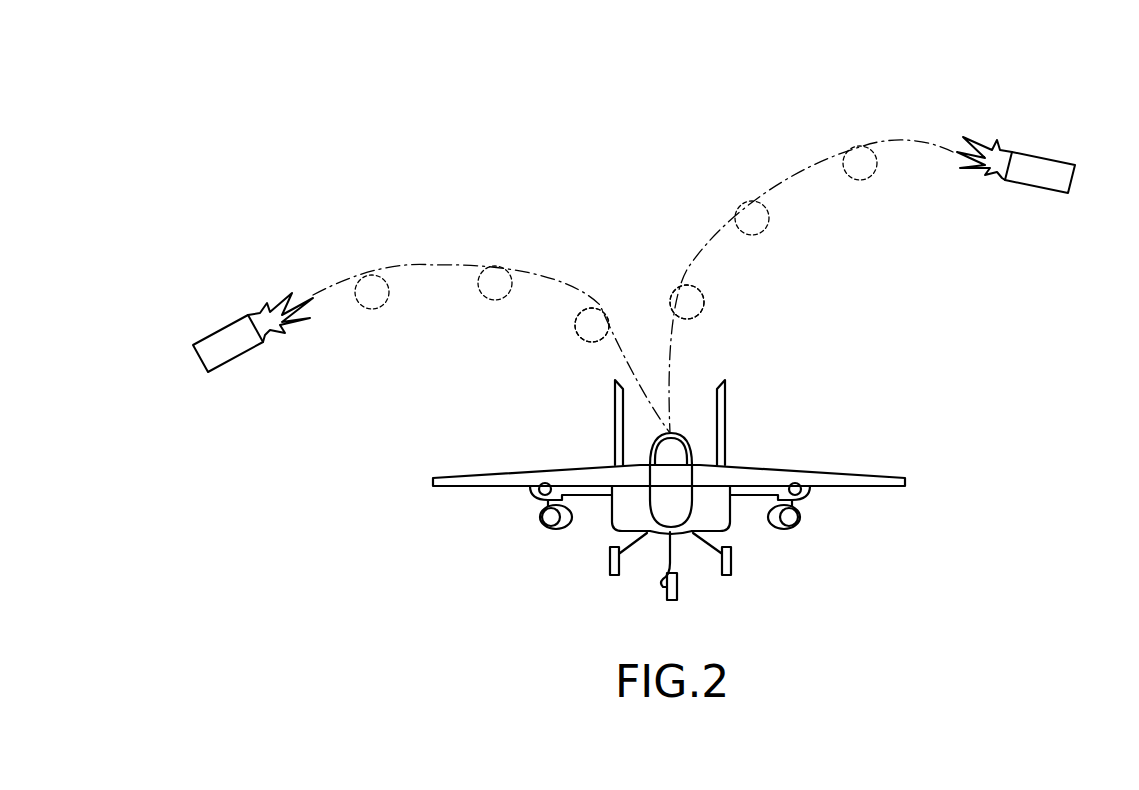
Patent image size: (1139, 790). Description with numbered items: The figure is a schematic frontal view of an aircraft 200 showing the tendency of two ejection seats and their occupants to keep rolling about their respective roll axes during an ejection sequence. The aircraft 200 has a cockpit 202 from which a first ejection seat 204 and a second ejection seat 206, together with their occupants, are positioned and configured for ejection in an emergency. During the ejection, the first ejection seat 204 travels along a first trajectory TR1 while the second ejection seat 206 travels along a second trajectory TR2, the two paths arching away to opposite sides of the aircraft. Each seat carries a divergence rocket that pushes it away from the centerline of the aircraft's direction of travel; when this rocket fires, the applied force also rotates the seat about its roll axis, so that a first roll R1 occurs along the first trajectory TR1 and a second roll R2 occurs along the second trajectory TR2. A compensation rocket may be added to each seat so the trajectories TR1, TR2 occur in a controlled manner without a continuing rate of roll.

The aircraft 200 is at (306, 485).
The cockpit 202 is at (680, 462).
The first ejection seat 204 is at (1040, 188).
The second ejection seat 206 is at (235, 357).
The first trajectory TR1 is at (812, 160).
The second trajectory TR2 is at (447, 263).
The first roll R1 is at (702, 310).
The second roll R2 is at (578, 337).